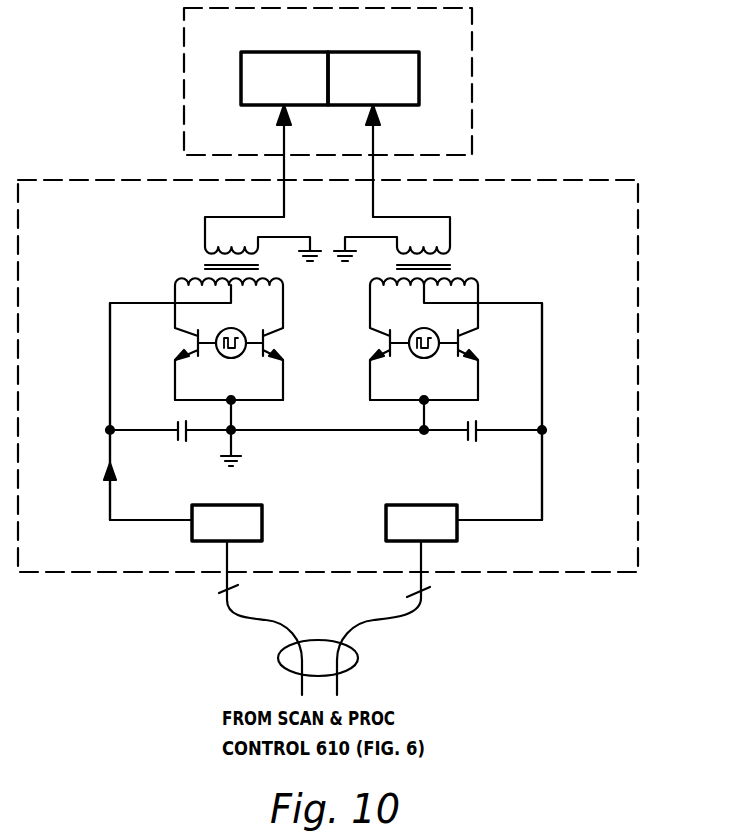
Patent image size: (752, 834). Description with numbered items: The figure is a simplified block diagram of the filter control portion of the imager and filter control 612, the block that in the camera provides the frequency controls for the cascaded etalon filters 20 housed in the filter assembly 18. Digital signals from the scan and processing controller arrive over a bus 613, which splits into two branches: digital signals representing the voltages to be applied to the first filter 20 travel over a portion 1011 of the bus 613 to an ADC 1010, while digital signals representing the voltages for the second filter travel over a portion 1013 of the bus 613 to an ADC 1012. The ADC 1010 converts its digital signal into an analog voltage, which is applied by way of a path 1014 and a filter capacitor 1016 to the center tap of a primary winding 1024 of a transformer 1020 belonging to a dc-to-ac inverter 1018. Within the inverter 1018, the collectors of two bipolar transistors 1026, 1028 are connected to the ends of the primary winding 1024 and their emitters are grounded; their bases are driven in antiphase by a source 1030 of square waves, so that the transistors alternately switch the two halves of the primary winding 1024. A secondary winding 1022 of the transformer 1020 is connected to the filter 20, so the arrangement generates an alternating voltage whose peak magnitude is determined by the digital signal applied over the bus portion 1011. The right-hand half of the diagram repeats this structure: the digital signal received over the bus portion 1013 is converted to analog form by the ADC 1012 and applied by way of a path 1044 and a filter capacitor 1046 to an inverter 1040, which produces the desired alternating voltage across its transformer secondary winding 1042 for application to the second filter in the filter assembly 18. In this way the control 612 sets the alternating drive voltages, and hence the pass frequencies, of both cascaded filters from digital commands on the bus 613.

The filter assembly 18 is at (472, 130).
The etalon filter 20 is at (241, 81).
The imager and filter control 612 is at (638, 395).
The dc-to-ac inverter 1018 is at (82, 281).
The inverter 1040 is at (583, 284).
The secondary winding 1022 is at (205, 246).
The transformer secondary winding 1042 is at (450, 263).
The primary winding 1024 is at (175, 283).
The transformer 1020 is at (283, 280).
The bipolar transistor 1026 is at (183, 340).
The bipolar transistor 1028 is at (283, 341).
The source of square waves 1030 is at (236, 358).
The filter capacitor 1016 is at (187, 441).
The filter capacitor 1046 is at (477, 441).
The path 1014 is at (110, 492).
The path 1044 is at (542, 474).
The ADC 1010 is at (262, 528).
The ADC 1012 is at (386, 528).
The portion of bus 1011 is at (232, 606).
The portion of bus 1013 is at (420, 600).
The bus 613 is at (358, 658).